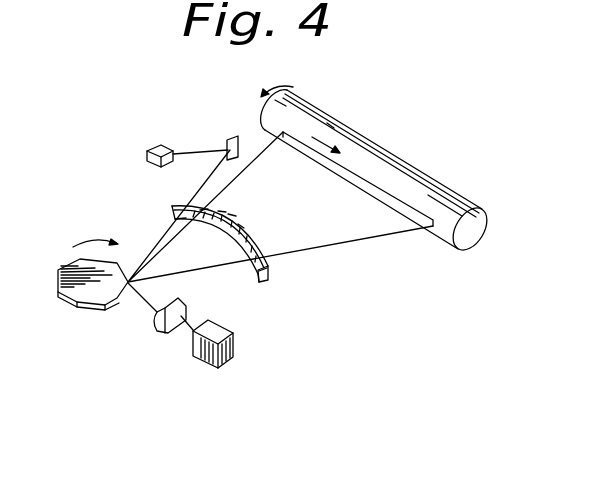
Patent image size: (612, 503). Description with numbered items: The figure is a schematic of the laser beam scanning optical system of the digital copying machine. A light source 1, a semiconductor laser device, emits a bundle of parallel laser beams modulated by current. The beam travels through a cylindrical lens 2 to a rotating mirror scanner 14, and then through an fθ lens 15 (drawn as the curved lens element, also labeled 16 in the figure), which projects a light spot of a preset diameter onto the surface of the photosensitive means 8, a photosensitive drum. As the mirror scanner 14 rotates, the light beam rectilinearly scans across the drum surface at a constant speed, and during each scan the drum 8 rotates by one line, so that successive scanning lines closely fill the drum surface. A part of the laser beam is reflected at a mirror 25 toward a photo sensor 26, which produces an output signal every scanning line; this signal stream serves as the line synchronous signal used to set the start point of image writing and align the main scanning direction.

The light source 1 is at (233, 351).
The cylindrical lens 2 is at (157, 327).
The photosensitive means 8 is at (435, 190).
The rotating mirror scanner 14 is at (88, 288).
The fθ lens 15 is at (268, 274).
The f-theta scanning lens 16 is at (160, 239).
The mirror 25 is at (232, 138).
The photo sensor 26 is at (160, 146).